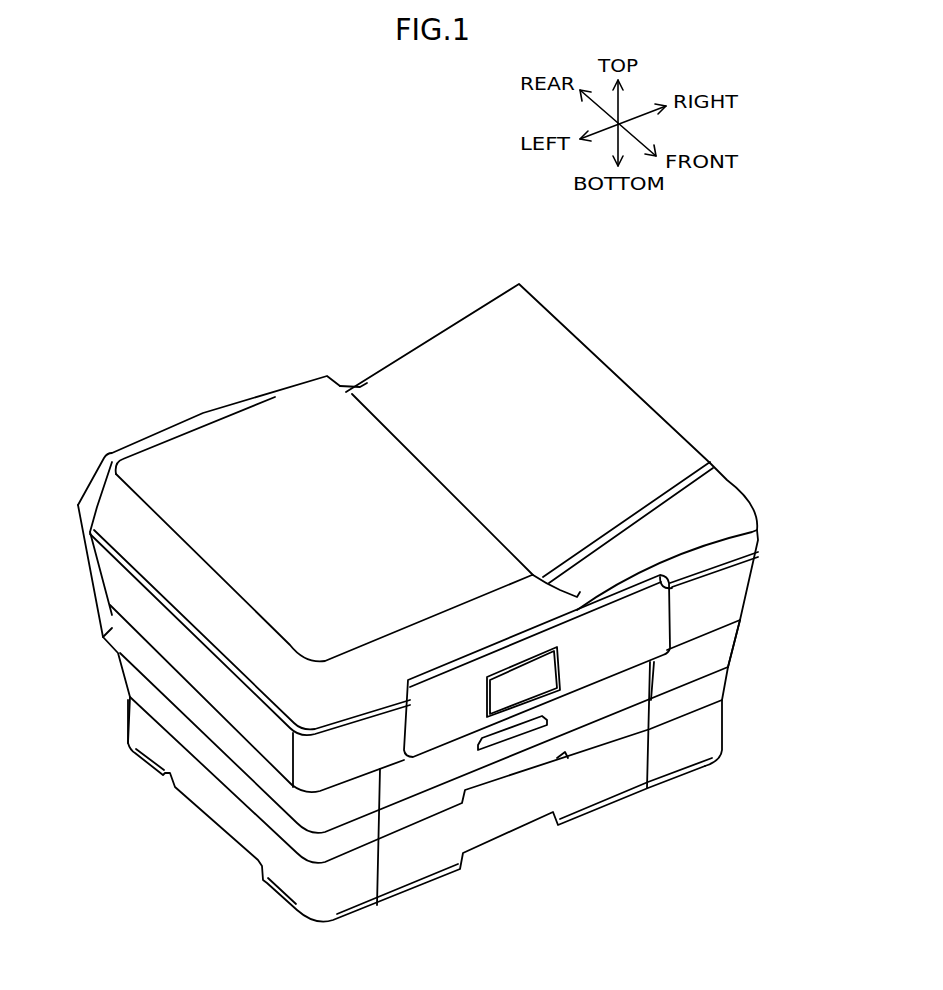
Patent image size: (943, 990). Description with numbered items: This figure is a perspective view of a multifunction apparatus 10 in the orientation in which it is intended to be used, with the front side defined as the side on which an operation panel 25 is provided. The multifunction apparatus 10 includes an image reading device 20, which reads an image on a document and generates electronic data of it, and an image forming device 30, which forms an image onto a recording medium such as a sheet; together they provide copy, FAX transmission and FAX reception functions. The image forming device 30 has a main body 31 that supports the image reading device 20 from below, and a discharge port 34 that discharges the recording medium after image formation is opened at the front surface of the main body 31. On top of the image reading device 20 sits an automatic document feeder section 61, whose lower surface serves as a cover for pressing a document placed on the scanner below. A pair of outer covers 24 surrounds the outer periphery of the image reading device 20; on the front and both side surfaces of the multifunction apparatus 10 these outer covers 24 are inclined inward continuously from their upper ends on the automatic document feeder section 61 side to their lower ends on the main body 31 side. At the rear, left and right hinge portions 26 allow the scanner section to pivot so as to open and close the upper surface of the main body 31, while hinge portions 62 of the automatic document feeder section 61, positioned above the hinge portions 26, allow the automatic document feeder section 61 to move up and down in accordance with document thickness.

The multifunction apparatus 10 is at (275, 377).
The image reading device 20 is at (769, 465).
The outer cover 24 is at (157, 610).
The operation panel 25 is at (433, 732).
The hinge portion 26 is at (97, 610).
The image forming device 30 is at (752, 640).
The main body 31 is at (730, 668).
The discharge port 34 is at (602, 688).
The automatic document feeder section 61 is at (133, 465).
The hinge portion 62 is at (110, 458).